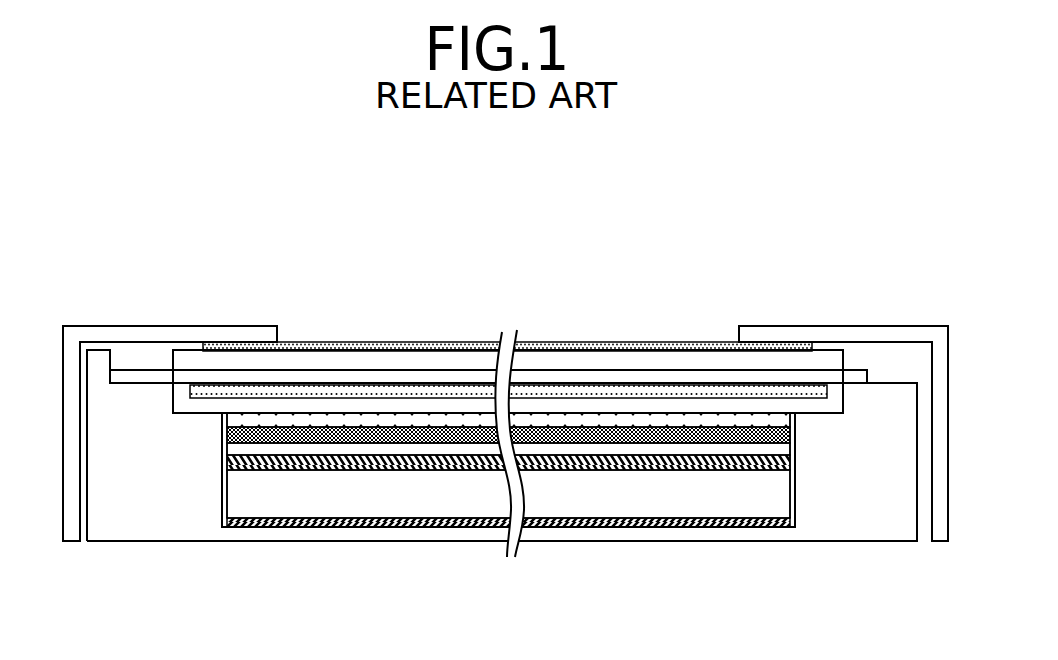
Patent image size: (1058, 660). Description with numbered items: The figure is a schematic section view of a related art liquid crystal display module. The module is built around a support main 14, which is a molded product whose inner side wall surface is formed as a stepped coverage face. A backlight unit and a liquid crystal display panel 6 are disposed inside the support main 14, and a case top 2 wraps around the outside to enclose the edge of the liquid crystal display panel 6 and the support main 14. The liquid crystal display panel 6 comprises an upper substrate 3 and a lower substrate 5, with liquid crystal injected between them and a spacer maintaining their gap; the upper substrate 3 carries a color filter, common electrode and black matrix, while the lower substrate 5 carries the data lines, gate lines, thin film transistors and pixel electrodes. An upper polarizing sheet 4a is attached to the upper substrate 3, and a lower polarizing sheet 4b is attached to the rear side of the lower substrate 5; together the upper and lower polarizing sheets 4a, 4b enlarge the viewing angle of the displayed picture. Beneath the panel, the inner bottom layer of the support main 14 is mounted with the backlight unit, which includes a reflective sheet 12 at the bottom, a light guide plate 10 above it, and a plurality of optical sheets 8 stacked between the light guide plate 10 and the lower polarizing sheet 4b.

The case top 2 is at (938, 330).
The upper substrate 3 is at (690, 362).
The upper polarizing sheet 4a is at (473, 340).
The lower polarizing sheet 4b is at (378, 395).
The lower substrate 5 is at (747, 378).
The liquid crystal display panel 6 is at (710, 262).
The optical sheets 8 is at (298, 462).
The light guide plate 10 is at (630, 493).
The reflective sheet 12 is at (407, 523).
The support main 14 is at (843, 538).